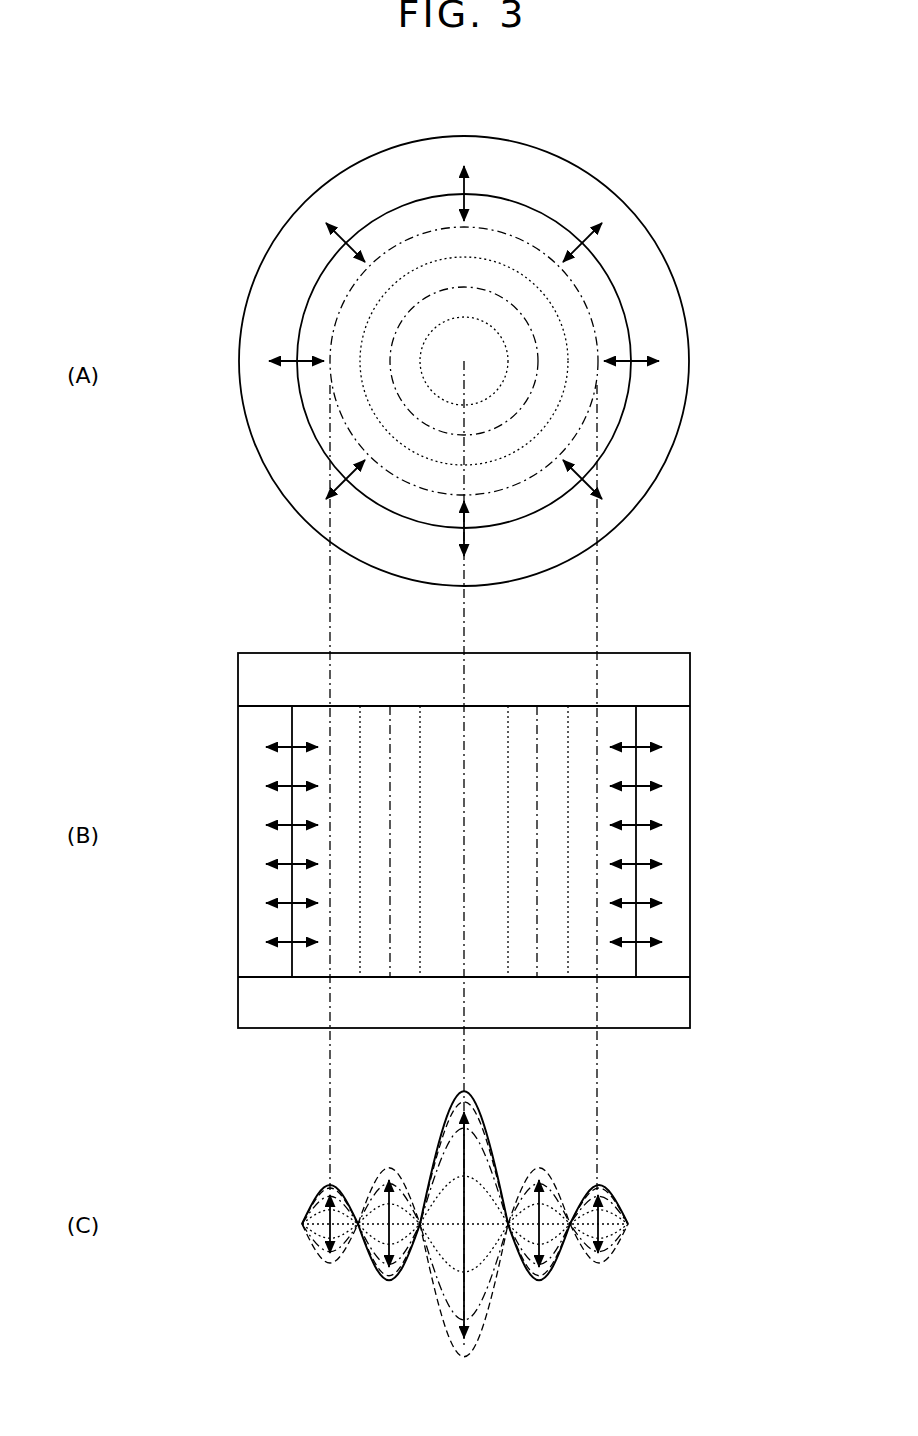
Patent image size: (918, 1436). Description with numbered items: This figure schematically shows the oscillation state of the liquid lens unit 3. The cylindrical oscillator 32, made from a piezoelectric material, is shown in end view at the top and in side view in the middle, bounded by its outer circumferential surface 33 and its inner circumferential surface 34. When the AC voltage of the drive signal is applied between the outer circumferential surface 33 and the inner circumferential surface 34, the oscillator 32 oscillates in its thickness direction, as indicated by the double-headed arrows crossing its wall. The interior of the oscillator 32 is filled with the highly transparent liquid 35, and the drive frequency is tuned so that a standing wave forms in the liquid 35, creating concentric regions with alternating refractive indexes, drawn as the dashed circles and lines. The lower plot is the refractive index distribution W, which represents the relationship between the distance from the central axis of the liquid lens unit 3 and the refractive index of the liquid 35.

The liquid lens unit 3 is at (252, 184).
The oscillator 32 is at (527, 180).
The outer circumferential surface 33 is at (580, 167).
The inner circumferential surface 34 is at (552, 228).
The liquid 35 is at (550, 327).
The refractive index distribution W is at (328, 1183).